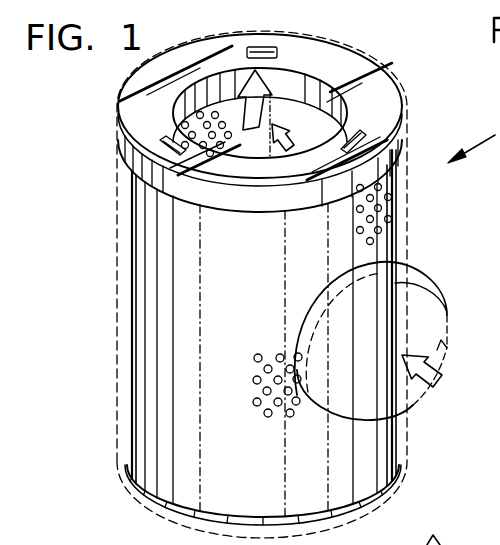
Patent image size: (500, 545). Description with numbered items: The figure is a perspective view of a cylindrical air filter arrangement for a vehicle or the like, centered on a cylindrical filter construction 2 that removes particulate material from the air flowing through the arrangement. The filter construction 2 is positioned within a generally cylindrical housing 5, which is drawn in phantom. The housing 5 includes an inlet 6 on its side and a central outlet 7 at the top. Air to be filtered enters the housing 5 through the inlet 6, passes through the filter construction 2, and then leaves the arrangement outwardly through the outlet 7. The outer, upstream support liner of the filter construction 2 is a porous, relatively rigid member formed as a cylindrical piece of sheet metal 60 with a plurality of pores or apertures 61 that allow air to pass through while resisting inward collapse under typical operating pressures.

The filter construction 2 is at (147, 409).
The housing 5 is at (402, 133).
The inlet 6 is at (452, 357).
The central outlet 7 is at (356, 76).
The sheet metal 60 is at (253, 320).
The apertures 61 is at (384, 191).